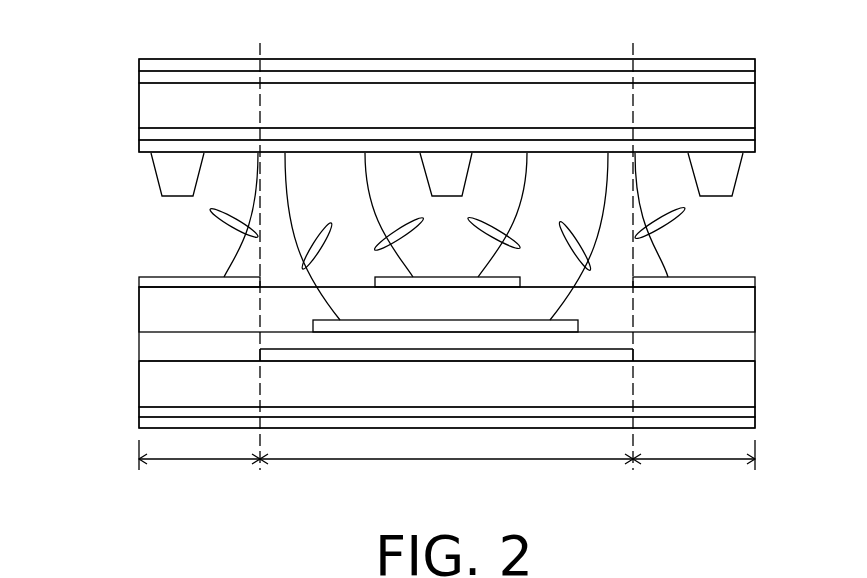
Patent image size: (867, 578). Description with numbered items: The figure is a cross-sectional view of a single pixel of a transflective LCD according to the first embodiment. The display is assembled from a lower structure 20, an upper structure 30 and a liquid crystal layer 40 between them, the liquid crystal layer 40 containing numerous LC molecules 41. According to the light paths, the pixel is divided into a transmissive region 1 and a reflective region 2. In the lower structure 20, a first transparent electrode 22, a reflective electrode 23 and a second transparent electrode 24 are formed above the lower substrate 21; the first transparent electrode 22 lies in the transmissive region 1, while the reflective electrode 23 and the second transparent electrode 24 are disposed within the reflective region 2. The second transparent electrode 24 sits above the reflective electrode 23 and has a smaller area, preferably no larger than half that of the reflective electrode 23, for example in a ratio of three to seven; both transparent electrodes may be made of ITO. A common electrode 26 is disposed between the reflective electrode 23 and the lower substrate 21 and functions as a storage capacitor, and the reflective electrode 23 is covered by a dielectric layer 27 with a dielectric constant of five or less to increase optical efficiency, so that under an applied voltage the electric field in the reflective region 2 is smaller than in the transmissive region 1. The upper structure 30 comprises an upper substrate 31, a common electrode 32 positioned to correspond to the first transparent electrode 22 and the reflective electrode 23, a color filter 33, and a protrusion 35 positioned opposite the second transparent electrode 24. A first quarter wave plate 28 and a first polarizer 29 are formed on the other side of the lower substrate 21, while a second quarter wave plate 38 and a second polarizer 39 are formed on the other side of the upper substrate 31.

The transmissive region 1 is at (447, 474).
The reflective region 2 is at (455, 485).
The lower structure 20 is at (68, 280).
The lower substrate 21 is at (730, 388).
The first transparent electrode 22 is at (163, 281).
The reflective electrode 23 is at (578, 326).
The second transparent electrode 24 is at (423, 283).
The common electrode 26 is at (608, 355).
The dielectric layer 27 is at (745, 312).
The first quarter wave plate 28 is at (733, 413).
The first polarizer 29 is at (737, 423).
The upper structure 30 is at (68, 61).
The upper substrate 31 is at (738, 108).
The common electrode 32 is at (743, 147).
The color filter 33 is at (742, 137).
The protrusion 35 is at (437, 168).
The second quarter wave plate 38 is at (738, 77).
The second polarizer 39 is at (728, 67).
The liquid crystal layer 40 is at (68, 153).
The LC molecules 41 is at (217, 218).